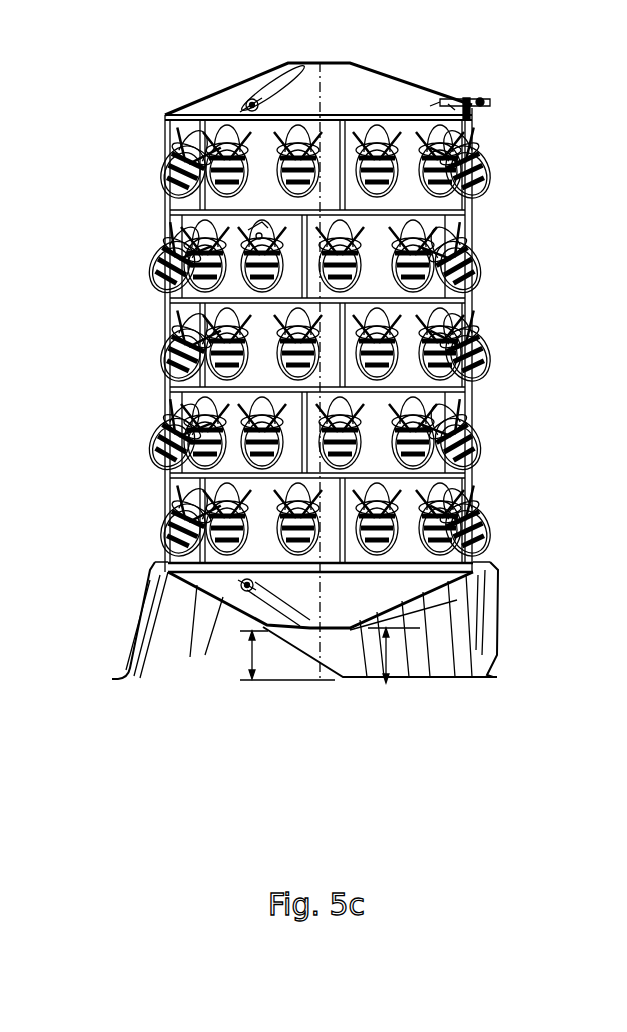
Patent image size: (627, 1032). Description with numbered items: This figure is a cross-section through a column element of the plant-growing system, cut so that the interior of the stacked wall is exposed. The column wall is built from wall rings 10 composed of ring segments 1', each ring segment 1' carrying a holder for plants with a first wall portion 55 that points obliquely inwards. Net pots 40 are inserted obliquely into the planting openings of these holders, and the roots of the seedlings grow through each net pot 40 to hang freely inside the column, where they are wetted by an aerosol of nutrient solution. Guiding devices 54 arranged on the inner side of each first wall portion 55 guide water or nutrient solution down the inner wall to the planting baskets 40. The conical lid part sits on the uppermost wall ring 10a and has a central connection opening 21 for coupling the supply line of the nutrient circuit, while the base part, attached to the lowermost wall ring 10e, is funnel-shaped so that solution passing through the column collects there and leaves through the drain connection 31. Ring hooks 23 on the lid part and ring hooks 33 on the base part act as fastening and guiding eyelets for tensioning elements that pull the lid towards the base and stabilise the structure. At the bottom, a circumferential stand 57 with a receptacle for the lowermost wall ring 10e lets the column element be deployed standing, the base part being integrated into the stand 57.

The ring segment 1' is at (330, 294).
The wall ring 10 is at (453, 377).
The uppermost wall ring 10a is at (470, 147).
The lowermost wall ring 10e is at (413, 530).
The connection opening 21 is at (322, 62).
The ring hook 23 is at (473, 102).
The connection opening 31 is at (325, 640).
The ring hook 33 is at (238, 583).
The net pot 40 is at (397, 348).
The guiding device 54 is at (255, 234).
The first wall portion 55 is at (258, 232).
The stand 57 is at (433, 660).